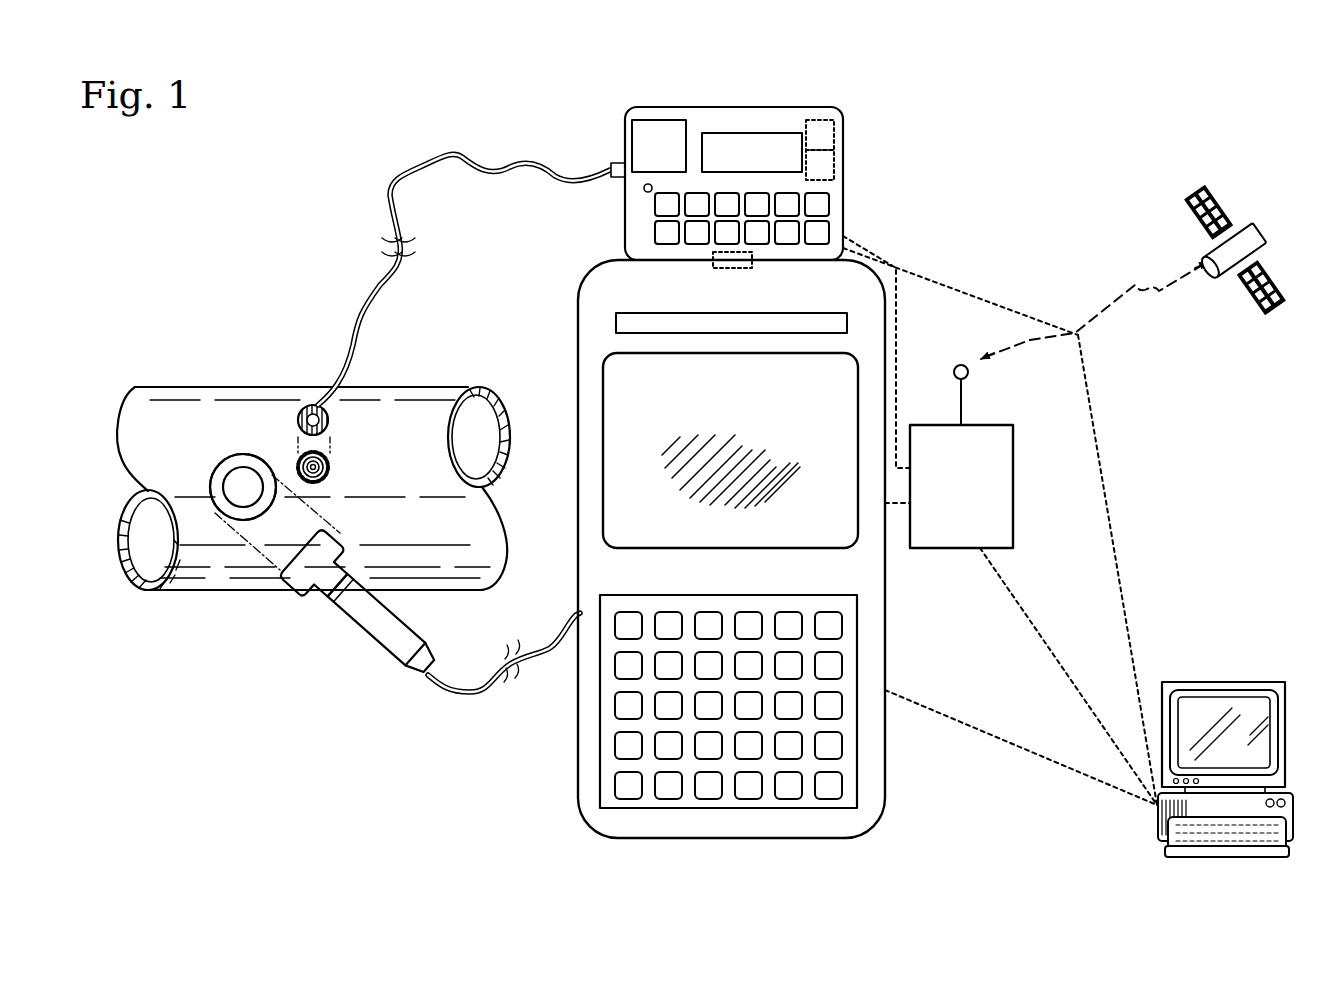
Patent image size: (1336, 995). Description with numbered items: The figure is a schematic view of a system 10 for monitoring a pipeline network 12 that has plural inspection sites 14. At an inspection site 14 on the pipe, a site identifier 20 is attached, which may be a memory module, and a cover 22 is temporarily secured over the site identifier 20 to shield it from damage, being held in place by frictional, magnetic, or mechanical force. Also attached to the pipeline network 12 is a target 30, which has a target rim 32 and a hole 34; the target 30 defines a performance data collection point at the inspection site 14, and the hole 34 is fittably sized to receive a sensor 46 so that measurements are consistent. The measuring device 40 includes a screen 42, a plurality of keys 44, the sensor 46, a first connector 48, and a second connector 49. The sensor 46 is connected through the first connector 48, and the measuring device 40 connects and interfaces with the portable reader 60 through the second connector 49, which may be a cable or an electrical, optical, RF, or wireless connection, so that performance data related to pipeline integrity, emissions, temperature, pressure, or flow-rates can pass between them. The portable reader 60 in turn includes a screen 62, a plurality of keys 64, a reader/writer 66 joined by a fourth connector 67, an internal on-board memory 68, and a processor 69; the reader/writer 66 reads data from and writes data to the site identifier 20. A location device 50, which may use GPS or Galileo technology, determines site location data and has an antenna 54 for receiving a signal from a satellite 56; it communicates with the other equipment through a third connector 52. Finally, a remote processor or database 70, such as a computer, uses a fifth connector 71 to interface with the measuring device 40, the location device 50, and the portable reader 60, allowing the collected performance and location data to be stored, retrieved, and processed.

The system 10 is at (1004, 126).
The pipeline network 12 is at (106, 400).
The inspection site 14 is at (283, 393).
The site identifier 20 is at (317, 481).
The cover 22 is at (333, 465).
The target 30 is at (234, 436).
The target rim 32 is at (214, 480).
The hole 34 is at (243, 478).
The measuring device 40 is at (896, 613).
The screen 42 is at (730, 450).
The keys 44 is at (842, 723).
The sensor 46 is at (338, 613).
The first connector 48 is at (455, 693).
The second connector 49 is at (724, 270).
The location device 50 is at (1022, 490).
The third connector 52 is at (897, 324).
The antenna 54 is at (963, 394).
The satellite 56 is at (1250, 233).
The portable reader 60 is at (852, 118).
The screen 62 is at (752, 152).
The keys 64 is at (836, 214).
The reader/writer 66 is at (330, 421).
The fourth connector 67 is at (388, 200).
The internal on-board memory 68 is at (836, 136).
The processor 69 is at (836, 162).
The remote database 70 is at (1231, 677).
The fifth connector 71 is at (1122, 617).